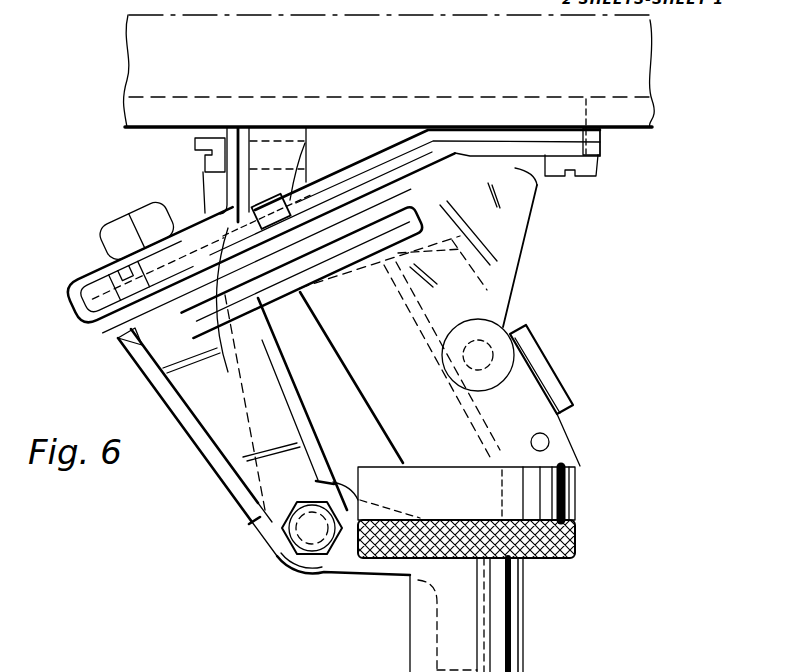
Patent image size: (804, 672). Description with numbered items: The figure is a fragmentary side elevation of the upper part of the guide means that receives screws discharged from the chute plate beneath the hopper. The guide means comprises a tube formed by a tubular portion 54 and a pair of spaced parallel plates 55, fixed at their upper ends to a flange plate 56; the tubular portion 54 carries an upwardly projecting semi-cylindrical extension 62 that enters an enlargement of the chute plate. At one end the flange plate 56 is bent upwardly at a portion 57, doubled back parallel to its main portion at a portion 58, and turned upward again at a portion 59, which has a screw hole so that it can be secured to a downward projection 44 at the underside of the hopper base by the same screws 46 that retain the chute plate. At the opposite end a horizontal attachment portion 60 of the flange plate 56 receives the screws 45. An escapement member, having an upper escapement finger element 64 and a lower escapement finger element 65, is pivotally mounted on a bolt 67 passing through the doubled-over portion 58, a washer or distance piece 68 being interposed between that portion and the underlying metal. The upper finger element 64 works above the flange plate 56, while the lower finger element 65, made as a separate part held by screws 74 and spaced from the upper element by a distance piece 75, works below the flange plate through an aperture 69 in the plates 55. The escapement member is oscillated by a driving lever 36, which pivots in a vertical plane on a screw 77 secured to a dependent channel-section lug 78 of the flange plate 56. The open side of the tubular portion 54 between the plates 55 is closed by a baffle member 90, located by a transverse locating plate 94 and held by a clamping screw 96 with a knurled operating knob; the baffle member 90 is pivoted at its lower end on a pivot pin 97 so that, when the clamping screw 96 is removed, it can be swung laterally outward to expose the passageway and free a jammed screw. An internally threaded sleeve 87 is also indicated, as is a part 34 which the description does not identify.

The downward projection 44 is at (365, 142).
The screws 46 is at (205, 135).
The upwardly bent portion of flange plate 59 is at (205, 213).
The upwardly projecting extension 62 is at (306, 148).
The upper escapement finger element 64 is at (418, 160).
The flange plate 56 is at (535, 185).
The horizontal attachment portion 60 is at (594, 147).
The screws 45 is at (594, 172).
The doubled over portion of flange plate 58 is at (97, 263).
The washer or distance piece 68 is at (108, 277).
The bolt 67 is at (137, 217).
The upwardly bent portion of flange plate 57 is at (86, 297).
The lower escapement finger element 65 is at (378, 258).
The aperture 69 is at (440, 240).
The screws 74 is at (100, 328).
The distance piece 75 is at (132, 358).
The dependent channel section lug 78 is at (227, 430).
The tubular portion 54 is at (367, 348).
The spaced parallel plates 55 is at (510, 255).
The baffle member 90 is at (500, 302).
The clamping screw 96 is at (510, 357).
The transverse locating plate 94 is at (560, 380).
The pivot pin 97 is at (549, 440).
The internally threaded sleeve 87 is at (576, 525).
The rod 34 is at (524, 612).
The driving lever 36 is at (355, 567).
The screw 77 is at (272, 555).